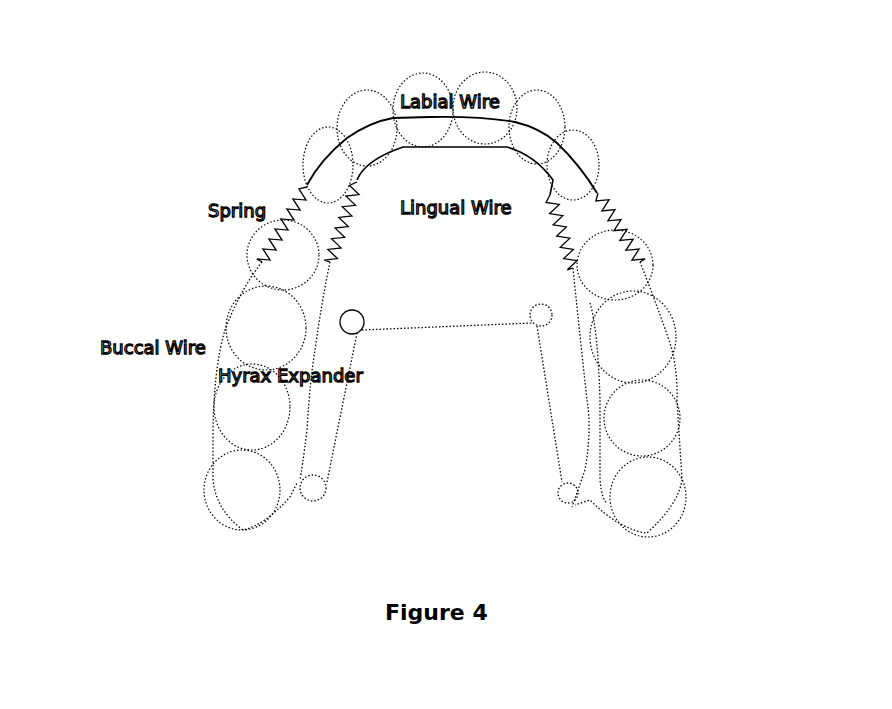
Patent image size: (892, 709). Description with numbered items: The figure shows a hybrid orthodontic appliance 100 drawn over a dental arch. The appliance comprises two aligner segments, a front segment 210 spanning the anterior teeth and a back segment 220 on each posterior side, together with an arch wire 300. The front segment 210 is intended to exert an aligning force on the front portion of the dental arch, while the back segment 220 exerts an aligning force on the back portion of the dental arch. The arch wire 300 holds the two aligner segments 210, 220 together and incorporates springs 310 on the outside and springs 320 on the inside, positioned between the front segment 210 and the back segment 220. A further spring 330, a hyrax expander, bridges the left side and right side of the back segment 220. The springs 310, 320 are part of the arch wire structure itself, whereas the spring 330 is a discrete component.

The hybrid orthodontic appliance 100 is at (451, 555).
The front segment 210 is at (452, 70).
The back segment 220 is at (207, 505).
The arch wire 300 is at (210, 437).
The spring 310 is at (300, 198).
The spring 320 is at (350, 225).
The spring 330 is at (448, 330).